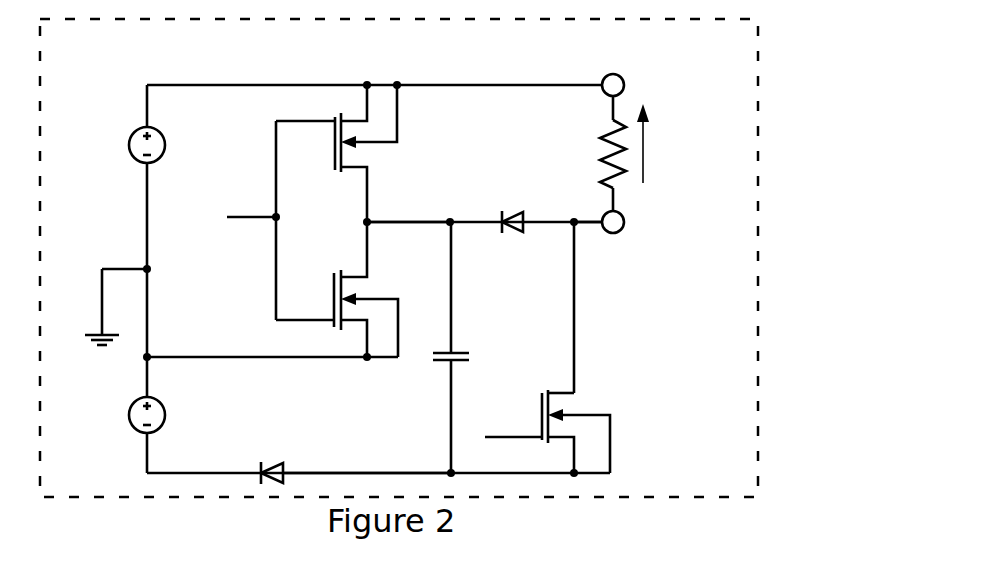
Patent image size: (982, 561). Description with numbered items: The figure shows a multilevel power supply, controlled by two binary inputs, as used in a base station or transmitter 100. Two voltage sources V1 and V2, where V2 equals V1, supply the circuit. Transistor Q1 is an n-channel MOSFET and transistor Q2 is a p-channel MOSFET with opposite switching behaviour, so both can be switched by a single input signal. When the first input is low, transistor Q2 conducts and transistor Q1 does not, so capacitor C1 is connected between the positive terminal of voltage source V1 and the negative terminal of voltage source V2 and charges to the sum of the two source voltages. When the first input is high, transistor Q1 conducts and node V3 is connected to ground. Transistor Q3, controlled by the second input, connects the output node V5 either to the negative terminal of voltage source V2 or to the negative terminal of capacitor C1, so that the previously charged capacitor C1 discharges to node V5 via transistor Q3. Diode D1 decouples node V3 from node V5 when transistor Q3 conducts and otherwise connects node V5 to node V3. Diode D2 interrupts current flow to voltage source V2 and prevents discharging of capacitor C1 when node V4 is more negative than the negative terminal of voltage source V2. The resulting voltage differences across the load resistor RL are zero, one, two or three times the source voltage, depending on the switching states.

The base station or transmitter 100 is at (692, 63).
The voltage source V1 is at (134, 145).
The voltage source V2 is at (168, 406).
The transistor Q1 is at (348, 289).
The transistor Q2 is at (347, 153).
The transistor Q3 is at (556, 431).
The diode D1 is at (511, 211).
The diode D2 is at (272, 464).
The capacitor C1 is at (457, 345).
The load resistor RL is at (600, 153).
The node V3 is at (408, 210).
The node V4 is at (367, 460).
The output node V5 is at (598, 241).